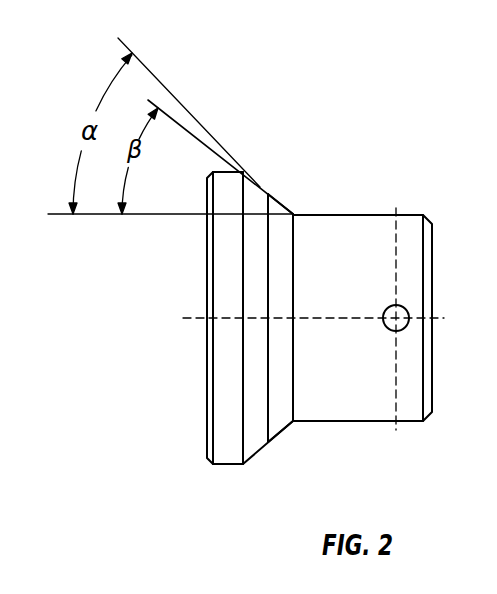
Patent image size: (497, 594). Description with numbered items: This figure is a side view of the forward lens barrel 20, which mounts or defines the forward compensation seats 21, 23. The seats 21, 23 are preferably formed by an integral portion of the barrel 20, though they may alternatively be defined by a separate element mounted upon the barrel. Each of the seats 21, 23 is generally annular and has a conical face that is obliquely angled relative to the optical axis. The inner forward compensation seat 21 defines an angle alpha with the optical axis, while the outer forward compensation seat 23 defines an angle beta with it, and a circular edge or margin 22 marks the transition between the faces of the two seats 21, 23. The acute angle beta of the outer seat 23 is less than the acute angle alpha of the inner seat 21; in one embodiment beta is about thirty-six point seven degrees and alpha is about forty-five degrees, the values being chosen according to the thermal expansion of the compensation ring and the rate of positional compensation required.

The forward lens barrel 20 is at (404, 419).
The inner forward compensation seat 21 is at (282, 203).
The circular edge 22 is at (270, 192).
The outer forward compensation seat 23 is at (258, 183).